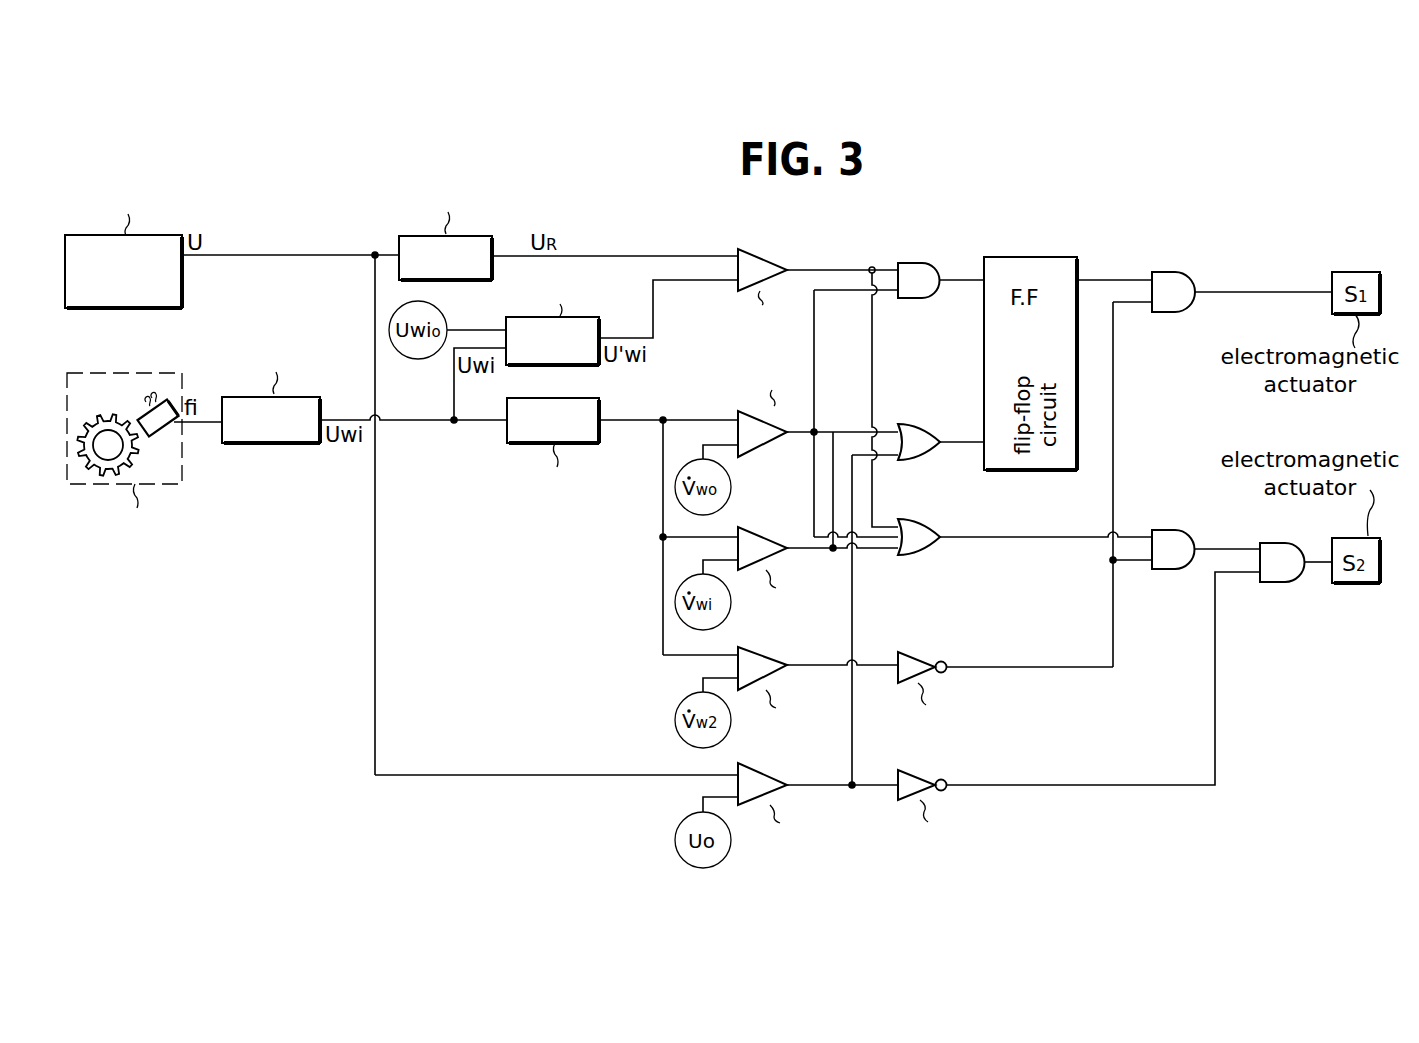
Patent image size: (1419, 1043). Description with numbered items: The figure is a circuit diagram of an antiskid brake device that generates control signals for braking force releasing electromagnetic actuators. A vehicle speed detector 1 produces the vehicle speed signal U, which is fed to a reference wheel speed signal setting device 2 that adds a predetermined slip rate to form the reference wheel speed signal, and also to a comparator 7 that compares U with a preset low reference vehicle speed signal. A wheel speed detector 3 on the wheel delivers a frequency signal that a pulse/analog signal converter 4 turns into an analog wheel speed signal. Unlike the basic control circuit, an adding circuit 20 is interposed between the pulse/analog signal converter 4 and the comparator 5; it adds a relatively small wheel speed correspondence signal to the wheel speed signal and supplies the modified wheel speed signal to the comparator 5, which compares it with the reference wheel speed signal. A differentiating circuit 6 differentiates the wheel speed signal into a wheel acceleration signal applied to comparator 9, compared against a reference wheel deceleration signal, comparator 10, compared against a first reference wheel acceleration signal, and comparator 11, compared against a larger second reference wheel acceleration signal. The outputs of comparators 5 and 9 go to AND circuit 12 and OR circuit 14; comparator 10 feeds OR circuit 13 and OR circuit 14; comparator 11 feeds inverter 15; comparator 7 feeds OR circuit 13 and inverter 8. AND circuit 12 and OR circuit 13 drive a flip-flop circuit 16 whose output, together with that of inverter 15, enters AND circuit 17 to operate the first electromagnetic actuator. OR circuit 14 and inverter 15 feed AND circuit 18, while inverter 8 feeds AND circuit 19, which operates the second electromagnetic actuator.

The vehicle speed detector 1 is at (133, 234).
The reference wheel speed signal setting device 2 is at (472, 218).
The wheel speed detector 3 is at (122, 373).
The pulse/analog signal converter 4 is at (270, 380).
The comparator 5 is at (771, 266).
The differentiating circuit 6 is at (551, 466).
The comparator 7 is at (764, 772).
The inverter 8 is at (920, 767).
The comparator 9 is at (765, 457).
The comparator 10 is at (774, 544).
The comparator 11 is at (774, 660).
The AND circuit 12 is at (908, 263).
The OR circuit 13 is at (908, 424).
The OR circuit 14 is at (908, 519).
The inverter 15 is at (920, 652).
The flip-flop circuit 16 is at (1023, 257).
The AND circuit 17 is at (1163, 272).
The AND circuit 18 is at (1163, 530).
The AND circuit 19 is at (1275, 543).
The adding circuit 20 is at (552, 324).